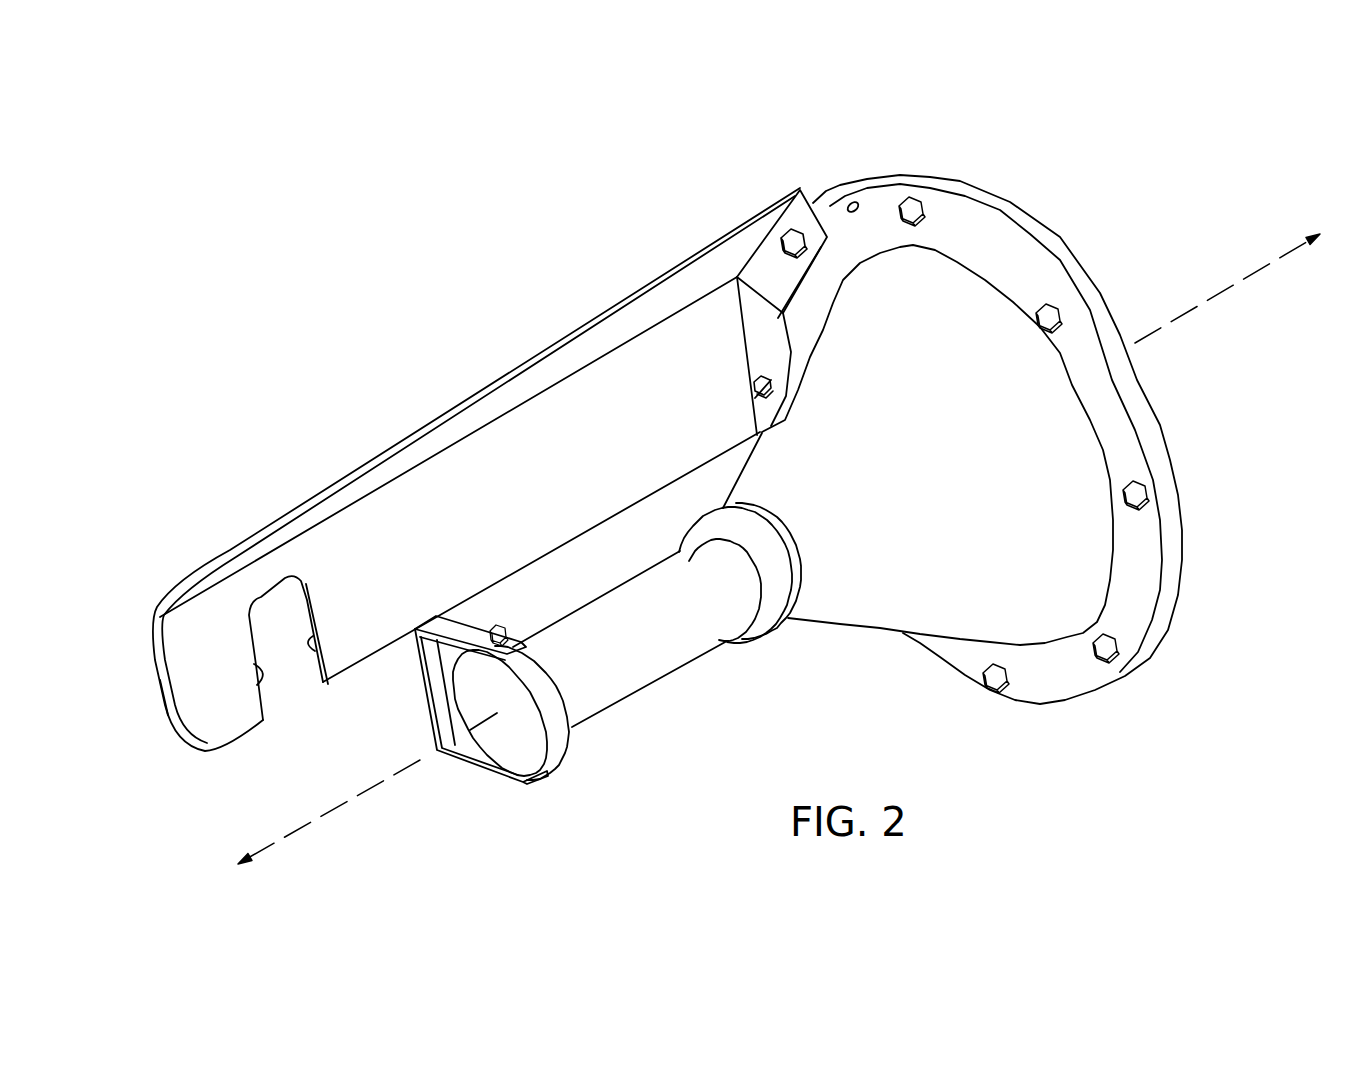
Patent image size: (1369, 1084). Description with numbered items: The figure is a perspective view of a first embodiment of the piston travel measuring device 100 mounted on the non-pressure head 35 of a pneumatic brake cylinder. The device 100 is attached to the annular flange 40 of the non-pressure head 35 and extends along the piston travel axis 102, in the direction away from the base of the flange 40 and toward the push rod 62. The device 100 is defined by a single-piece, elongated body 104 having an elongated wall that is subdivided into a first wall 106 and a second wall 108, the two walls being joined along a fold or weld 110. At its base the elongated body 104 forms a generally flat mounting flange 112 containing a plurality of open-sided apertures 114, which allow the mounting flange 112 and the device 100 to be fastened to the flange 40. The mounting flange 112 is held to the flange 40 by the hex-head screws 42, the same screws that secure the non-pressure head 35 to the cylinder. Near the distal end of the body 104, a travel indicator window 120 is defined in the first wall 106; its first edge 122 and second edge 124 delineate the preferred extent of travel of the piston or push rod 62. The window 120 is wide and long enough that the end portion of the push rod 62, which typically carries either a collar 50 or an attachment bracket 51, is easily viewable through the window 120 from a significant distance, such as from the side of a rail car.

The piston travel measuring device 100 is at (688, 170).
The elongated body 104 is at (474, 340).
The first wall 106 is at (217, 707).
The second wall 108 is at (303, 517).
The fold or weld 110 is at (394, 480).
The mounting flange 112 is at (808, 216).
The open-sided apertures 114 is at (815, 233).
The hex-head screws 42 is at (790, 247).
The annular flange 40 is at (1007, 273).
The non-pressure head 35 is at (1176, 390).
The piston travel axis 102 is at (1273, 262).
The travel indicator window 120 is at (273, 620).
The first edge 122 is at (257, 685).
The second edge 124 is at (314, 643).
The push rod 62 is at (640, 653).
The collar 50 is at (557, 737).
The attachment bracket 51 is at (472, 760).